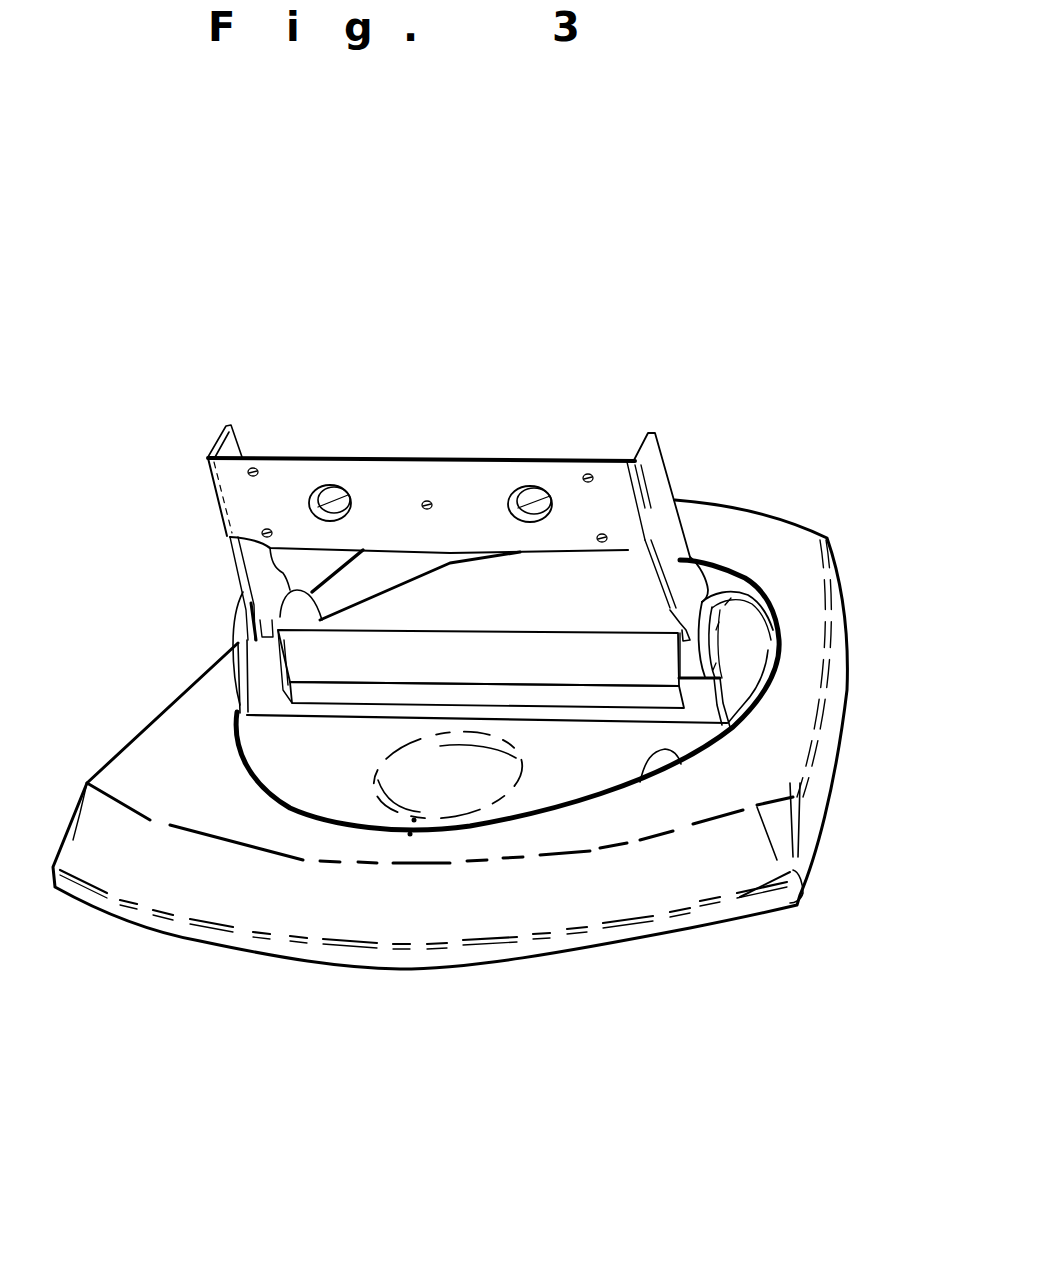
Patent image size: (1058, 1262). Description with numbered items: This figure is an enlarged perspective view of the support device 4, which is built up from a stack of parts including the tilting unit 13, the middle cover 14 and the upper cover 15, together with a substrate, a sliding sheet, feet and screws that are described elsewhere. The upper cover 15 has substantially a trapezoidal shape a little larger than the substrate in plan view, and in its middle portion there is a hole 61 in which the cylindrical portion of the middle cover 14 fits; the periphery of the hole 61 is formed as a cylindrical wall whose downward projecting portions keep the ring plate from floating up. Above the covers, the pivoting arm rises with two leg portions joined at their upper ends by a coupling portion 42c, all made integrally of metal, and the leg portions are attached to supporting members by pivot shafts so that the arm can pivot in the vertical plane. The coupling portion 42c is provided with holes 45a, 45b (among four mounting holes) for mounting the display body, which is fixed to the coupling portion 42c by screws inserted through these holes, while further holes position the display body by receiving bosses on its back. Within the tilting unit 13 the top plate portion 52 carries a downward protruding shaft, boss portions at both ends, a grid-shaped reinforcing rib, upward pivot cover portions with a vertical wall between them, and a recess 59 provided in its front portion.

The support device 4 is at (490, 476).
The coupling portion 42c is at (605, 478).
The hole 45a is at (522, 497).
The hole 45b is at (330, 497).
The tilting unit 13 is at (653, 463).
The middle cover 14 is at (747, 630).
The upper cover 15 is at (822, 760).
The top plate portion 52 is at (577, 773).
The recess 59 is at (406, 792).
The hole 61 is at (641, 786).